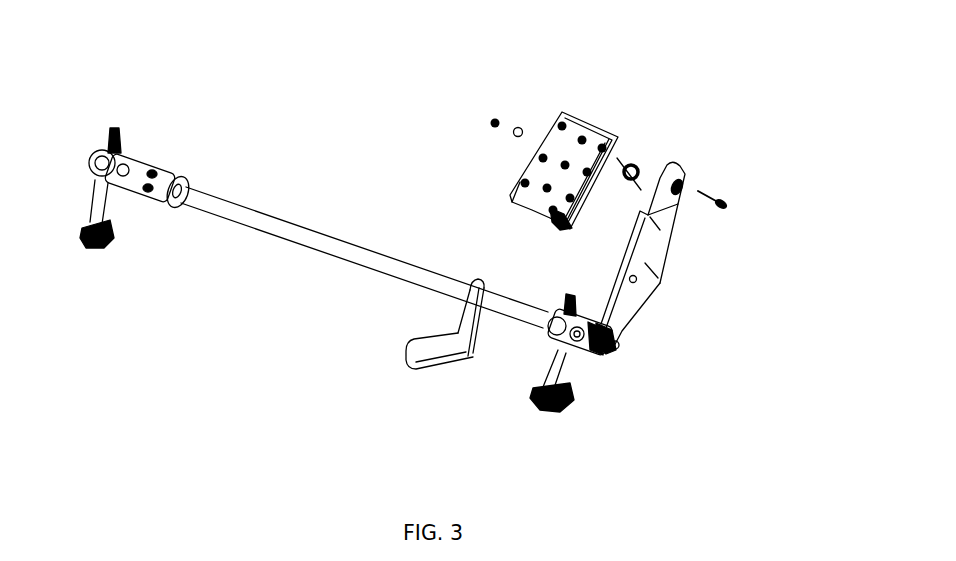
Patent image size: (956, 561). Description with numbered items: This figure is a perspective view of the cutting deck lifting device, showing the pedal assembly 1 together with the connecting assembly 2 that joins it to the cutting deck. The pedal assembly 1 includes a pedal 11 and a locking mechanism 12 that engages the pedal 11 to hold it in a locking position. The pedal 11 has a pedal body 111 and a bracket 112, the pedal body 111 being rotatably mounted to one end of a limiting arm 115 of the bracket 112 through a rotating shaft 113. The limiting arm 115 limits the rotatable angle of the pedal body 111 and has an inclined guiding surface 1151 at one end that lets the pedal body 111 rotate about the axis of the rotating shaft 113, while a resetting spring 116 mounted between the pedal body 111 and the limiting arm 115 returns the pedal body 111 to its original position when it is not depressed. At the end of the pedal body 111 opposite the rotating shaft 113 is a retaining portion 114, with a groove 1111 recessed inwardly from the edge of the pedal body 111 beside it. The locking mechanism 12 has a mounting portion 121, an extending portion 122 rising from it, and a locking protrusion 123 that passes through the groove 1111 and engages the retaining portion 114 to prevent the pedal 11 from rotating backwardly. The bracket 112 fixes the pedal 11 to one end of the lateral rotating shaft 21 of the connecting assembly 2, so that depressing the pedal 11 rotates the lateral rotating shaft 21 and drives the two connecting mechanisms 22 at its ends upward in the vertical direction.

The pedal assembly 1 is at (268, 22).
The pedal 11 is at (526, 92).
The pedal body 111 is at (566, 113).
The groove 1111 is at (530, 183).
The retaining portion 114 is at (552, 217).
The resetting spring 116 is at (640, 164).
The inclined guiding surface 1151 is at (672, 165).
The rotating shaft 113 is at (732, 210).
The limiting arm 115 is at (662, 214).
The bracket 112 is at (627, 320).
The locking mechanism 12 is at (494, 371).
The mounting portion 121 is at (431, 352).
The extending portion 122 is at (484, 326).
The locking protrusion 123 is at (484, 282).
The connecting assembly 2 is at (136, 331).
The lateral rotating shaft 21 is at (230, 203).
The connecting mechanism 22 is at (84, 246).